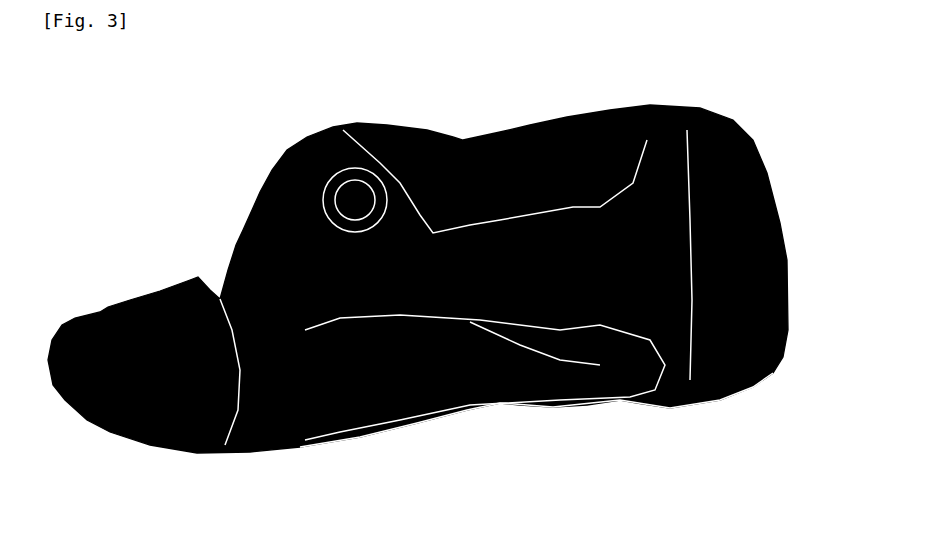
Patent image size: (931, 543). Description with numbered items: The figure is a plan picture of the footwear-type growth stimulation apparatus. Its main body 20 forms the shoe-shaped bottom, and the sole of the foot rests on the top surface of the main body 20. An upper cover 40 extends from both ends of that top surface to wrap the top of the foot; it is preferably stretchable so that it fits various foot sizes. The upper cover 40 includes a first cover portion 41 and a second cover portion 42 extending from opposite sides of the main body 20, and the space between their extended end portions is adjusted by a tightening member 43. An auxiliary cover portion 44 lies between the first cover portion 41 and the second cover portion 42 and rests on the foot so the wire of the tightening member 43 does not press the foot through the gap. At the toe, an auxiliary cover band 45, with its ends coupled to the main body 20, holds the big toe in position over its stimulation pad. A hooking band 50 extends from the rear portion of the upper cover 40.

The main body 20 is at (267, 233).
The upper cover 40 is at (398, 383).
The first cover portion 41 is at (497, 363).
The second cover portion 42 is at (465, 182).
The tightening member 43 is at (355, 197).
The auxiliary cover portion 44 is at (657, 200).
The auxiliary cover band 45 is at (168, 307).
The hooking band 50 is at (777, 323).